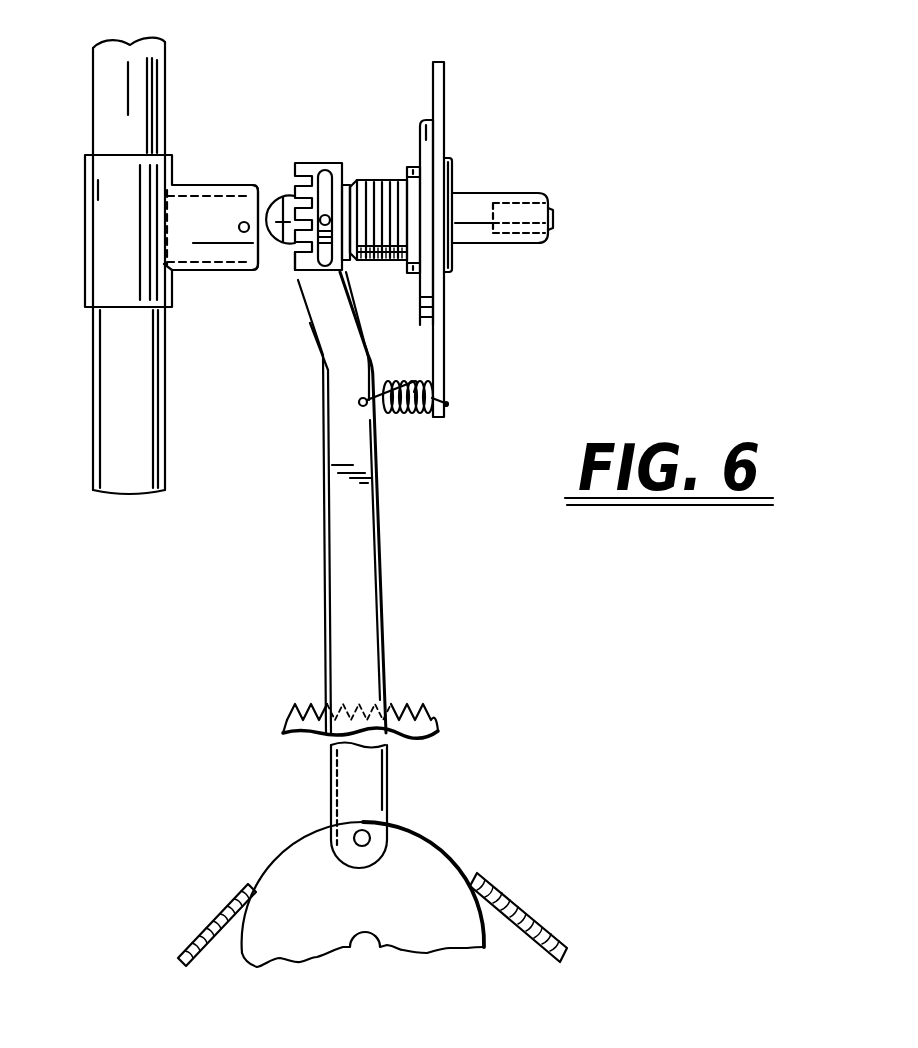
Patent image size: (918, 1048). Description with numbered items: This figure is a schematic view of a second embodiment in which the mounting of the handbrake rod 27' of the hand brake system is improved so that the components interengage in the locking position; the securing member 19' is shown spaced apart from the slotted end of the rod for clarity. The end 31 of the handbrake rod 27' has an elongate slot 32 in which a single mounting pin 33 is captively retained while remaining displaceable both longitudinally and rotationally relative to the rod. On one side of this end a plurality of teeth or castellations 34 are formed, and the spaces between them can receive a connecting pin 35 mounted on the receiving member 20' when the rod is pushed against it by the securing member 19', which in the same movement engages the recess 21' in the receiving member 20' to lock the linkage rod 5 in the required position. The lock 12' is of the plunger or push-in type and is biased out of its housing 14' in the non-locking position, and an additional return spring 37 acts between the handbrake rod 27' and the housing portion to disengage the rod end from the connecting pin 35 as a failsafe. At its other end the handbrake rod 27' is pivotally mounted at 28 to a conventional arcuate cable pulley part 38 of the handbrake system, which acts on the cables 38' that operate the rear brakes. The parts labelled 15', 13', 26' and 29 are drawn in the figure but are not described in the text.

The linkage rod 5 is at (110, 108).
The receiving member 20' is at (171, 217).
The recess 21' is at (235, 247).
The connecting pin 35 is at (243, 222).
The teeth or castellations 34 is at (300, 212).
The end of rod 31 is at (310, 160).
The elongate slot 32 is at (304, 271).
The mounting pin 33 is at (335, 213).
The housing 14' is at (388, 251).
The securing member 19' is at (372, 241).
The bracket 15' is at (420, 202).
The lock 12' is at (487, 232).
The shaft 13' is at (540, 206).
The return spring 37 is at (411, 374).
The lever 26' is at (388, 502).
The handbrake rod 27' is at (306, 506).
The ratchet teeth 29 is at (409, 716).
The pivot 28 is at (354, 836).
The arcuate cable pulley part 38 is at (363, 875).
The cables 38' is at (372, 907).